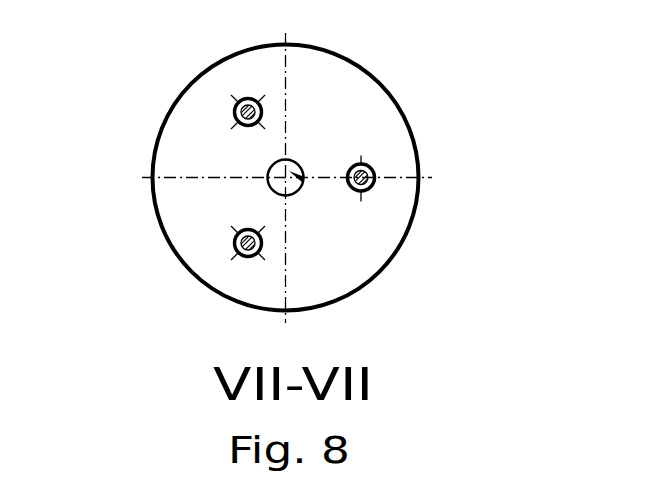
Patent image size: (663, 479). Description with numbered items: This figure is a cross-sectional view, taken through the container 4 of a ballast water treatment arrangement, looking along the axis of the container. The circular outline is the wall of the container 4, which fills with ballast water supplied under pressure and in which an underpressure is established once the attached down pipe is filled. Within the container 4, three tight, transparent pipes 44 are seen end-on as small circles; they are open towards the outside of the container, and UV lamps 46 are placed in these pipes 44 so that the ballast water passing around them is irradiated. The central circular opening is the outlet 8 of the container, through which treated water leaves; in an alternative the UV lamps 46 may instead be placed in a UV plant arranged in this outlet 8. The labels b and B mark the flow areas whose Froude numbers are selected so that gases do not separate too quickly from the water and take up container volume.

The container 4 is at (158, 127).
The outlet 8 is at (302, 180).
The tight, transparent pipes 44 is at (367, 163).
The UV lamps 46 is at (376, 169).
The flow area b is at (267, 190).
The flow area B is at (208, 237).